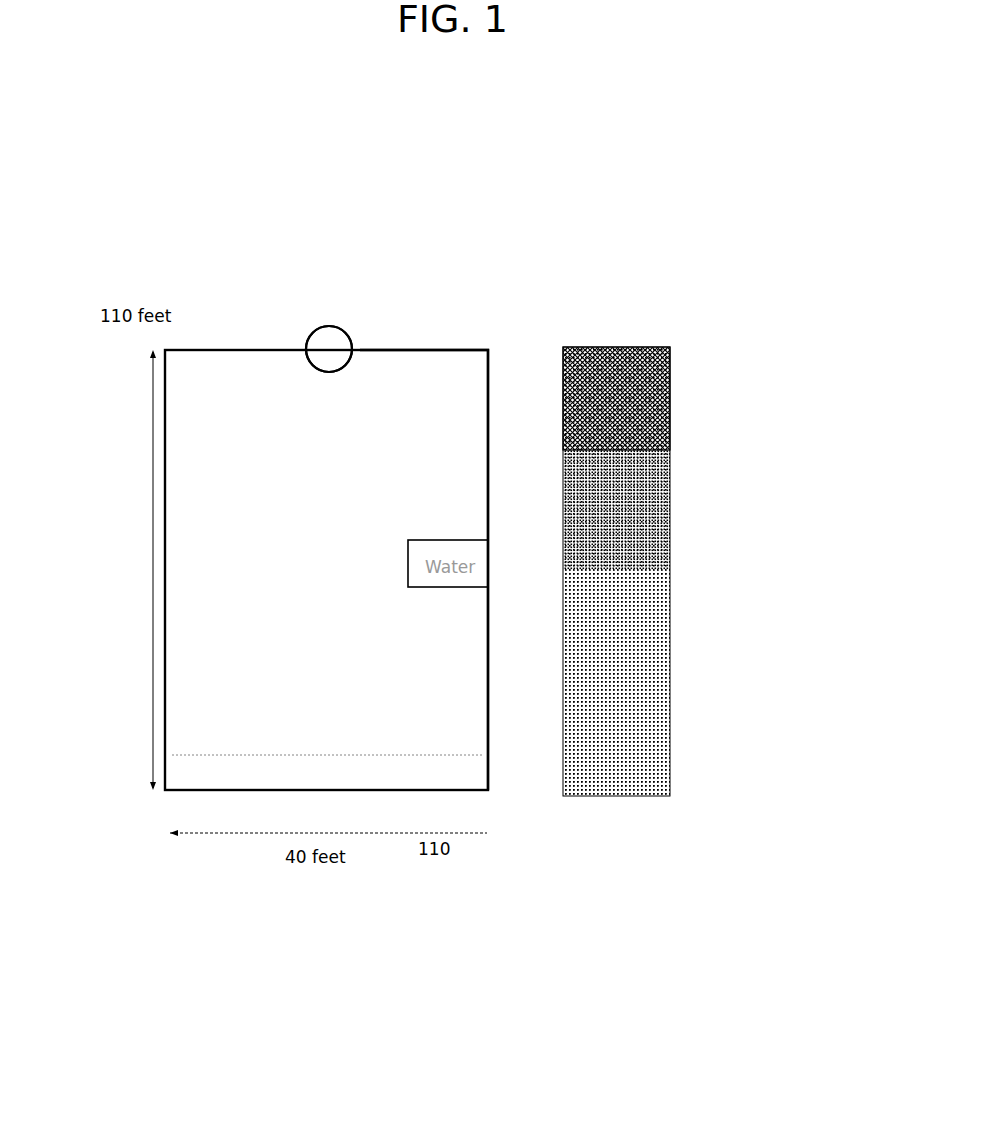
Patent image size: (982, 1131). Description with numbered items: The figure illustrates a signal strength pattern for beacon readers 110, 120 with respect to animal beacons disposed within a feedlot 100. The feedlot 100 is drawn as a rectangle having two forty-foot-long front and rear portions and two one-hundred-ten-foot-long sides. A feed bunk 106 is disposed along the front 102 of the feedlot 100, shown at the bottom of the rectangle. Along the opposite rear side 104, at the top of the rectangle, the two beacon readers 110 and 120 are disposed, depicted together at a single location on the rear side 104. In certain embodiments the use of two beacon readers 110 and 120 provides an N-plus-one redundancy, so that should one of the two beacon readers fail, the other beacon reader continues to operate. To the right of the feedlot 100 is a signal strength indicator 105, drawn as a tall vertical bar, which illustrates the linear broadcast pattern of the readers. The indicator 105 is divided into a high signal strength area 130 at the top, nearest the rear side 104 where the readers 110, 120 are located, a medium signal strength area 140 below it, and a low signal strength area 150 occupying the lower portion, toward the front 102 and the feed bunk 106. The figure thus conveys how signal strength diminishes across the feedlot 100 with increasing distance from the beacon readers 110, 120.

The feedlot 100 is at (323, 1003).
The front 102 is at (328, 795).
The rear side 104 is at (433, 344).
The signal strength indicator 105 is at (679, 595).
The feed bunk 106 is at (193, 777).
The beacon reader 110 is at (306, 347).
The beacon reader 120 is at (352, 343).
The high signal strength area 130 is at (670, 365).
The medium signal strength area 140 is at (670, 468).
The low signal strength area 150 is at (670, 658).